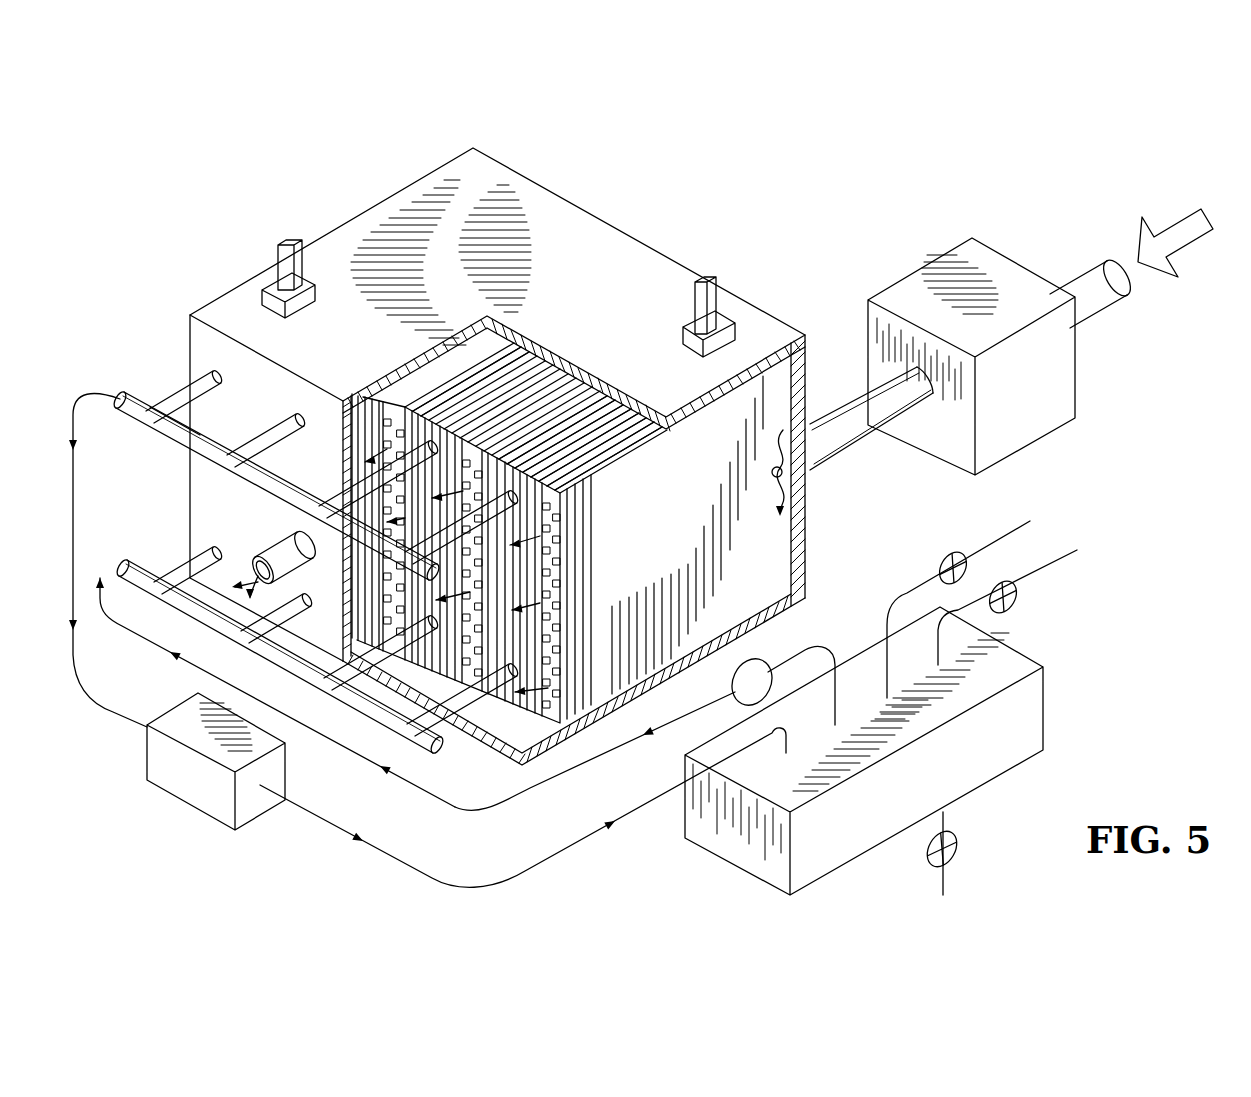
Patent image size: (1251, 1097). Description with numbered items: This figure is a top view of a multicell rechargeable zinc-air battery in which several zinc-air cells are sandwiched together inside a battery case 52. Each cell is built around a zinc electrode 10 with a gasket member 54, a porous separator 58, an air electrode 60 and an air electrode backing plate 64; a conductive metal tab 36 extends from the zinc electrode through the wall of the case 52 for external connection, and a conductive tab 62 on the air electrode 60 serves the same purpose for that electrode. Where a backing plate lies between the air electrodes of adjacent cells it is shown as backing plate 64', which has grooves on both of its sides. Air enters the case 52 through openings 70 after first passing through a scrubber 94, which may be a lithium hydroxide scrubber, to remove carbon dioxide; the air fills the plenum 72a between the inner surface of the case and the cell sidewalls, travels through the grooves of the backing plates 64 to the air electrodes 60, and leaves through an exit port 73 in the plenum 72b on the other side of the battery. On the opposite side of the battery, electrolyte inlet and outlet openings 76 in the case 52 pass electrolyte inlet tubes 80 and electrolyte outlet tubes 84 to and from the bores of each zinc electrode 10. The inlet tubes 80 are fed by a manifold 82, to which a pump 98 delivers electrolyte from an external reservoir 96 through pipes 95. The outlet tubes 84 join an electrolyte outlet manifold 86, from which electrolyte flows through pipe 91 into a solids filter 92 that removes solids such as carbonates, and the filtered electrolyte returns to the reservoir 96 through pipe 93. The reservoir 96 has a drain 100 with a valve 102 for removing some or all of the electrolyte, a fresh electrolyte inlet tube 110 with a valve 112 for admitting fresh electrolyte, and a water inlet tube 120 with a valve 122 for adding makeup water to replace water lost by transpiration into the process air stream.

The zinc electrode 10 is at (520, 372).
The conductive metal tab 36 is at (275, 248).
The battery case 52 is at (233, 305).
The gasket member 54 is at (555, 465).
The porous separator 58 is at (565, 460).
The air electrode 60 is at (577, 457).
The conductive tab 62 is at (718, 278).
The air electrode backing plate 64 is at (611, 460).
The air electrode backing plate 64' is at (469, 364).
The openings 70 is at (853, 441).
The plenum 72a is at (790, 536).
The plenum 72b is at (553, 768).
The exit port 73 is at (263, 548).
The electrolyte inlet and outlet openings 76 is at (252, 447).
The electrolyte inlet tubes 80 is at (272, 664).
The manifold 82 is at (143, 566).
The electrolyte outlet tubes 84 is at (170, 405).
The electrolyte outlet manifold 86 is at (185, 437).
The pipe 91 is at (137, 718).
The solids filter 92 is at (212, 814).
The pipe 93 is at (565, 855).
The scrubber 94 is at (1078, 372).
The pipes 95 is at (457, 810).
The reservoir 96 is at (1045, 700).
The pump 98 is at (732, 684).
The drain 100 is at (950, 838).
The valve 102 is at (940, 883).
The fresh electrolyte inlet tube 110 is at (908, 592).
The valve 112 is at (950, 552).
The water inlet tube 120 is at (970, 613).
The valve 122 is at (1020, 598).